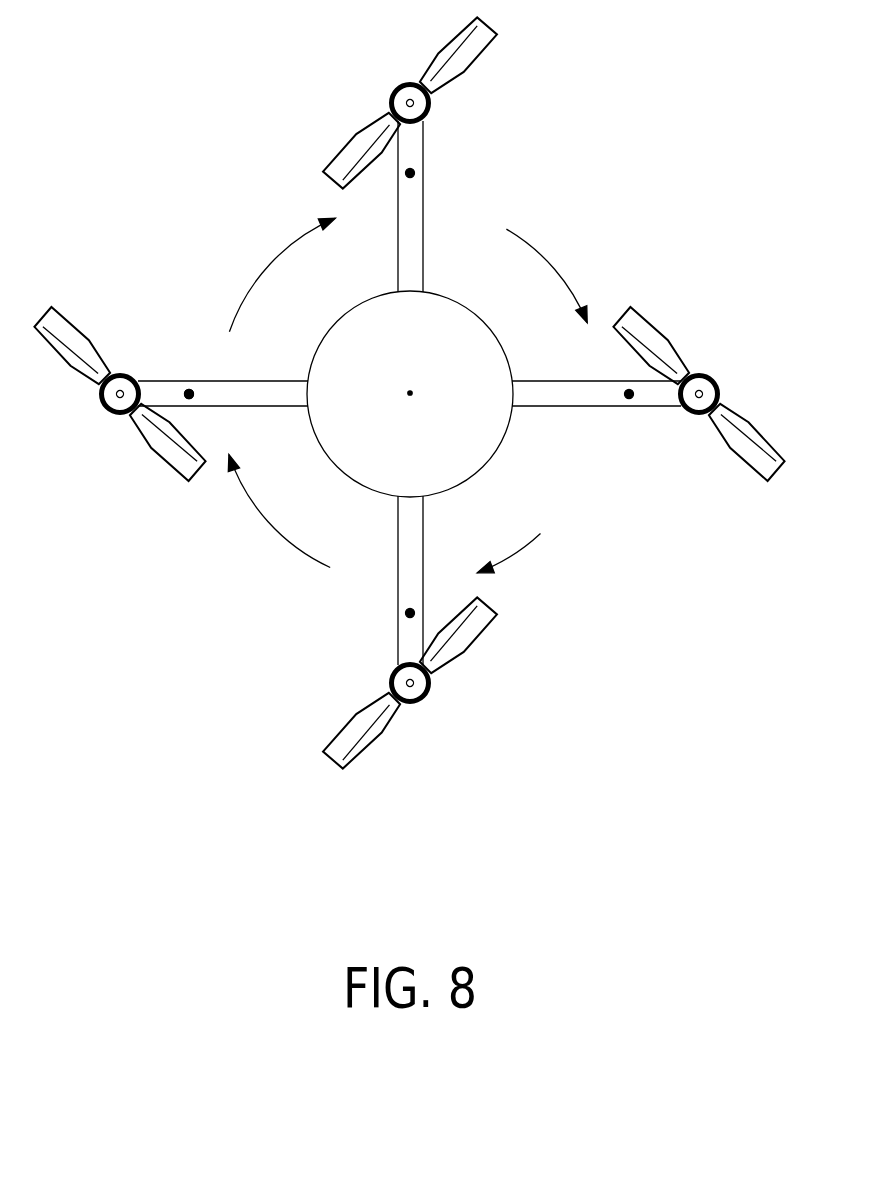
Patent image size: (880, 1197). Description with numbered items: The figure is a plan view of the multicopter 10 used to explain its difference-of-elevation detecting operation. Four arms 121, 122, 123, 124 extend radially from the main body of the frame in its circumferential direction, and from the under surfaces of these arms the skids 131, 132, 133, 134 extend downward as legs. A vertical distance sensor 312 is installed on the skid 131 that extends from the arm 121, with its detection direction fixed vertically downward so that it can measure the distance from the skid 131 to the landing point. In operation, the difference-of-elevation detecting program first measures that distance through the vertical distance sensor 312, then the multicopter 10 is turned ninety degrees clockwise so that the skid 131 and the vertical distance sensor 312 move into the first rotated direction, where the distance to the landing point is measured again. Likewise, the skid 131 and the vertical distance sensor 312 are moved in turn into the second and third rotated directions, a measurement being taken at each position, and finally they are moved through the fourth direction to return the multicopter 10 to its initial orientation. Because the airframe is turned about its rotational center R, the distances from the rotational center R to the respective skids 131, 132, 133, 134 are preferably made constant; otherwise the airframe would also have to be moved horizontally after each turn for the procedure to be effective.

The multicopter 10 is at (142, 76).
The arm 121 is at (262, 392).
The arm 122 is at (418, 207).
The arm 123 is at (557, 398).
The arm 124 is at (410, 535).
The skid 131 is at (185, 392).
The skid 132 is at (416, 170).
The skid 133 is at (634, 398).
The skid 134 is at (408, 618).
The vertical distance sensor 312 is at (189, 394).
The rotational center R is at (410, 392).